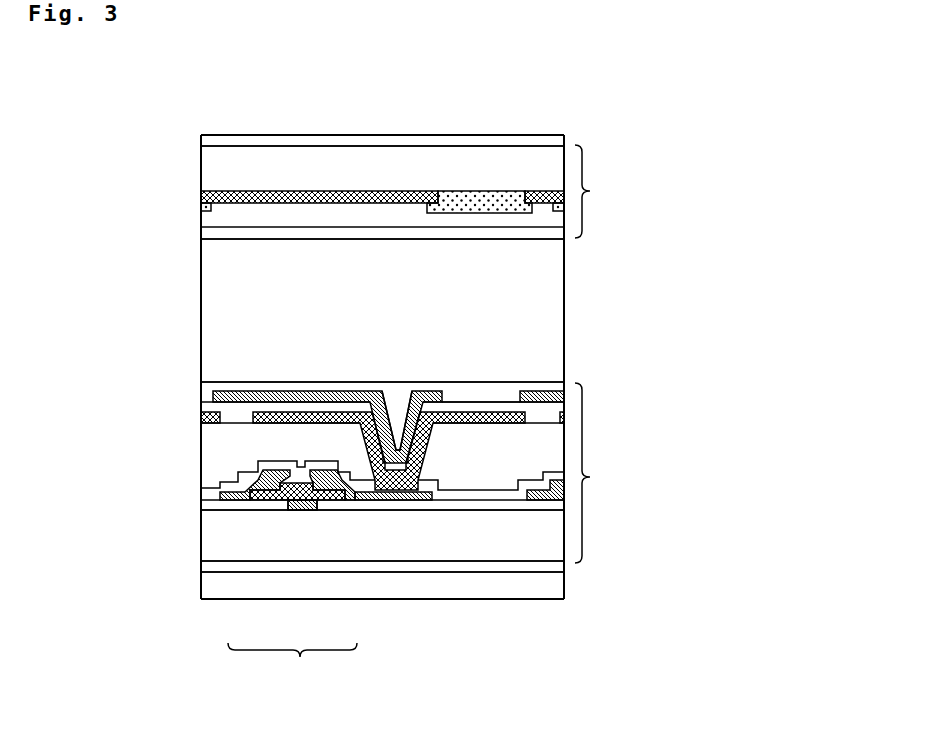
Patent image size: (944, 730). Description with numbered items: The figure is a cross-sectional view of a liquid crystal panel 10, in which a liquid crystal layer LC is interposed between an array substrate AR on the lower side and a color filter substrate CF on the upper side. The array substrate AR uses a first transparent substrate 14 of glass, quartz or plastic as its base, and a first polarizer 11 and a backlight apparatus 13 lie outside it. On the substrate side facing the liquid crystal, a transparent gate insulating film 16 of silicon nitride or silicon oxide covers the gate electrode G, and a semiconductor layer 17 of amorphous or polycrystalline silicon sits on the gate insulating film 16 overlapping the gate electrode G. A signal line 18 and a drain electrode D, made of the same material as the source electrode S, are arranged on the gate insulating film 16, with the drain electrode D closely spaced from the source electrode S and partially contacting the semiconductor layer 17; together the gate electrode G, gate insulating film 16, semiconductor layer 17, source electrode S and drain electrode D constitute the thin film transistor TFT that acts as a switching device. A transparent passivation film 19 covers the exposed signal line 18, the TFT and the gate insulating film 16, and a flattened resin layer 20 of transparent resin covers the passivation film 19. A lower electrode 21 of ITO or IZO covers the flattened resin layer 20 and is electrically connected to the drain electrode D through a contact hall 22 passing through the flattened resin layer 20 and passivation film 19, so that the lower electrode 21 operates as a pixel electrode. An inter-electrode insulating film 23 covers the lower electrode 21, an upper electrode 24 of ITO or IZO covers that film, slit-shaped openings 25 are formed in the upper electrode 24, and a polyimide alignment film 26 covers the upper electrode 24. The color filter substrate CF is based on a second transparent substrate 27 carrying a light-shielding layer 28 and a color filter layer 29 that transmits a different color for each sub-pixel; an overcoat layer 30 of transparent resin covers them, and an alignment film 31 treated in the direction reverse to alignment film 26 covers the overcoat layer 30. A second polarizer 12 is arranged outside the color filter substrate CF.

The liquid crystal panel 10 is at (179, 93).
The first polarizer 11 is at (515, 567).
The second polarizer 12 is at (313, 142).
The backlight apparatus 13 is at (545, 587).
The first transparent substrate 14 is at (477, 542).
The gate insulating film 16 is at (410, 507).
The semiconductor layer 17 is at (312, 510).
The signal line 18 is at (543, 502).
The passivation film 19 is at (440, 503).
The flattened resin layer 20 is at (217, 457).
The lower electrode 21 is at (347, 413).
The contact hall 22 is at (397, 447).
The inter-electrode insulating film 23 is at (305, 407).
The upper electrode 24 is at (247, 391).
The slit-shaped opening 25 is at (482, 394).
The alignment film 26 is at (505, 400).
The second transparent substrate 27 is at (348, 162).
The light-shielding layer 28 is at (397, 190).
The color filter layer 29 is at (515, 197).
The overcoat layer 30 is at (455, 220).
The alignment film 31 is at (478, 235).
The source electrode S is at (245, 500).
The gate electrode G is at (292, 510).
The drain electrode D is at (357, 505).
The thin film transistor TFT is at (292, 666).
The color filter substrate CF is at (600, 191).
The array substrate AR is at (600, 473).
The liquid crystal layer LC is at (536, 277).